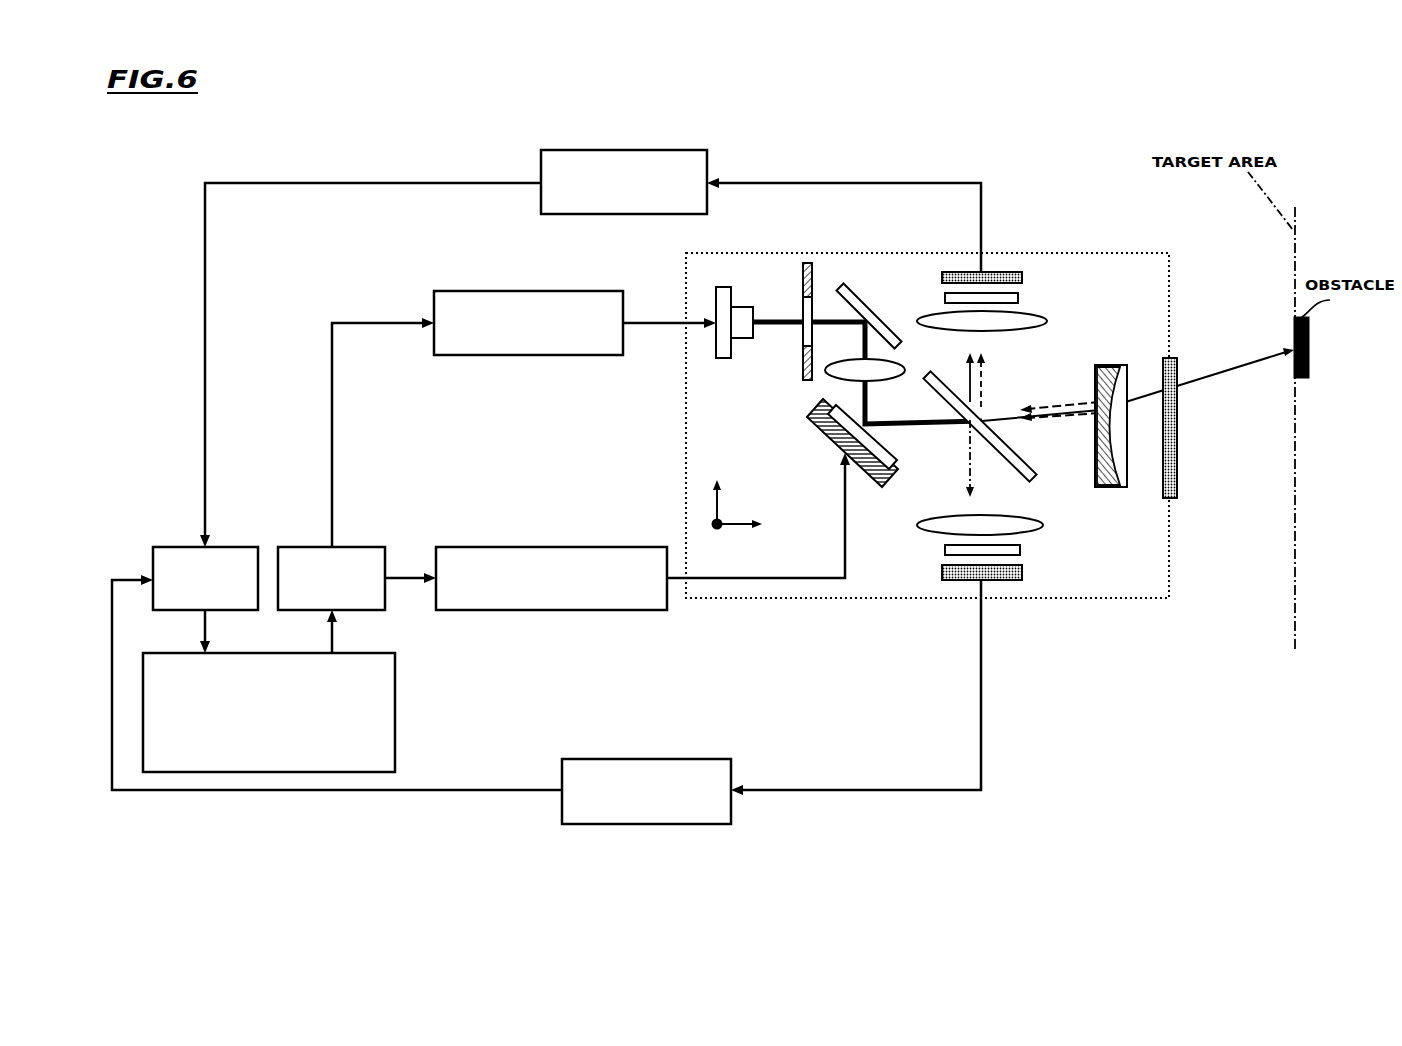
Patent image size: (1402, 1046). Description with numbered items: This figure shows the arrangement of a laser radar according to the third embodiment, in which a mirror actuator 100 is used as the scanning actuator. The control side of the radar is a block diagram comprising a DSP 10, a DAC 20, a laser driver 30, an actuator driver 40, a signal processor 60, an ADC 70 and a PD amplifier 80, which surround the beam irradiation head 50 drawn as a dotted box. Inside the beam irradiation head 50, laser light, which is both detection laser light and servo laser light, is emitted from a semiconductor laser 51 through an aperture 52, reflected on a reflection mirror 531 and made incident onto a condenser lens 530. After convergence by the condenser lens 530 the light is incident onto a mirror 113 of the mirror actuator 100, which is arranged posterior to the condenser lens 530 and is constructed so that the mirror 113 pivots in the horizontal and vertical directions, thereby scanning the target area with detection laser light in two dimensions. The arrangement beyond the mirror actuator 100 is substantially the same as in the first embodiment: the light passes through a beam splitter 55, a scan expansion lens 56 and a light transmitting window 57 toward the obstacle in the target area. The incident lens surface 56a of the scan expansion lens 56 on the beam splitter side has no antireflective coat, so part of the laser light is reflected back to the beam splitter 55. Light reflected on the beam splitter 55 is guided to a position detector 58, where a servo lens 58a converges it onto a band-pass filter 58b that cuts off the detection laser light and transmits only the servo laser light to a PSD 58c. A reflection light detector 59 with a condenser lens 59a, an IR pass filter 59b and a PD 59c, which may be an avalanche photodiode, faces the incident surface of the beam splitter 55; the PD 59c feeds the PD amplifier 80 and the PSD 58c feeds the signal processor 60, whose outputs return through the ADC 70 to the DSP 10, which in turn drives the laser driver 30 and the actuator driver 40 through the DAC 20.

The DSP 10 is at (395, 708).
The DAC 20 is at (350, 547).
The laser driver 30 is at (507, 291).
The actuator driver 40 is at (520, 547).
The beam irradiation head 50 is at (838, 602).
The semiconductor laser 51 is at (730, 287).
The aperture 52 is at (806, 263).
The beam splitter 55 is at (995, 418).
The scan expansion lens 56 is at (1123, 370).
The incident lens surface 56a is at (1093, 427).
The light transmitting window 57 is at (1175, 358).
The position detector 58 is at (1012, 585).
The servo lens 58a is at (1043, 525).
The band-pass filter 58b is at (1020, 550).
The PSD 58c is at (1022, 573).
The reflection light detector 59 is at (1020, 262).
The condenser lens 59a is at (1047, 320).
The IR pass filter 59b is at (1018, 297).
The PD 59c is at (1022, 276).
The signal processor 60 is at (612, 759).
The ADC 70 is at (225, 547).
The PD amplifier 80 is at (648, 214).
The mirror actuator 100 is at (823, 440).
The mirror 113 is at (893, 443).
The condenser lens 530 is at (838, 383).
The reflection mirror 531 is at (882, 283).